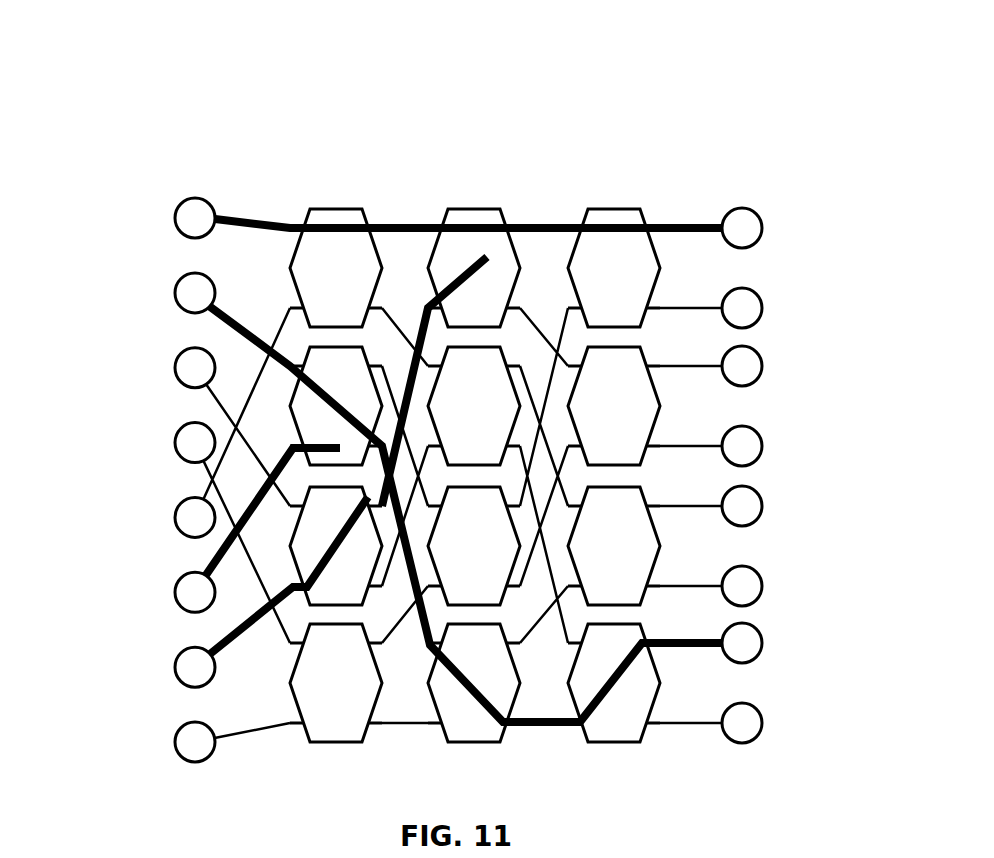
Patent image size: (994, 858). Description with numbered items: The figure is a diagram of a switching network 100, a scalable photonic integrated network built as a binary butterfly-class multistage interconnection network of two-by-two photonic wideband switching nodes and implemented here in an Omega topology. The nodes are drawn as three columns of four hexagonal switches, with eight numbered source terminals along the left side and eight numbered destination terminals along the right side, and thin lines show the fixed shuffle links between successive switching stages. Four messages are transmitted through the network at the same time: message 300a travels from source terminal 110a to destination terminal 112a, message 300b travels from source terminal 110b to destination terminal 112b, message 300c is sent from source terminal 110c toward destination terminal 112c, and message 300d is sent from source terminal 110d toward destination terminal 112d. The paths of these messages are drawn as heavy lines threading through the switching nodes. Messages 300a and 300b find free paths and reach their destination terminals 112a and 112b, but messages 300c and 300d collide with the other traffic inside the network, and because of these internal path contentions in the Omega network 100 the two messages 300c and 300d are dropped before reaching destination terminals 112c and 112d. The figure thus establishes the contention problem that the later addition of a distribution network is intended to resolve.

The scalable photonic integrated network 100 is at (478, 118).
The source terminal 110a is at (172, 217).
The source terminal 110b is at (172, 291).
The source terminal 110c is at (172, 592).
The source terminal 110d is at (172, 667).
The destination terminal 112a is at (767, 217).
The destination terminal 112b is at (768, 636).
The destination terminal 112c is at (768, 713).
The destination terminal 112d is at (768, 296).
The message 300a is at (255, 187).
The message 300b is at (245, 300).
The message 300c is at (240, 475).
The message 300d is at (242, 610).